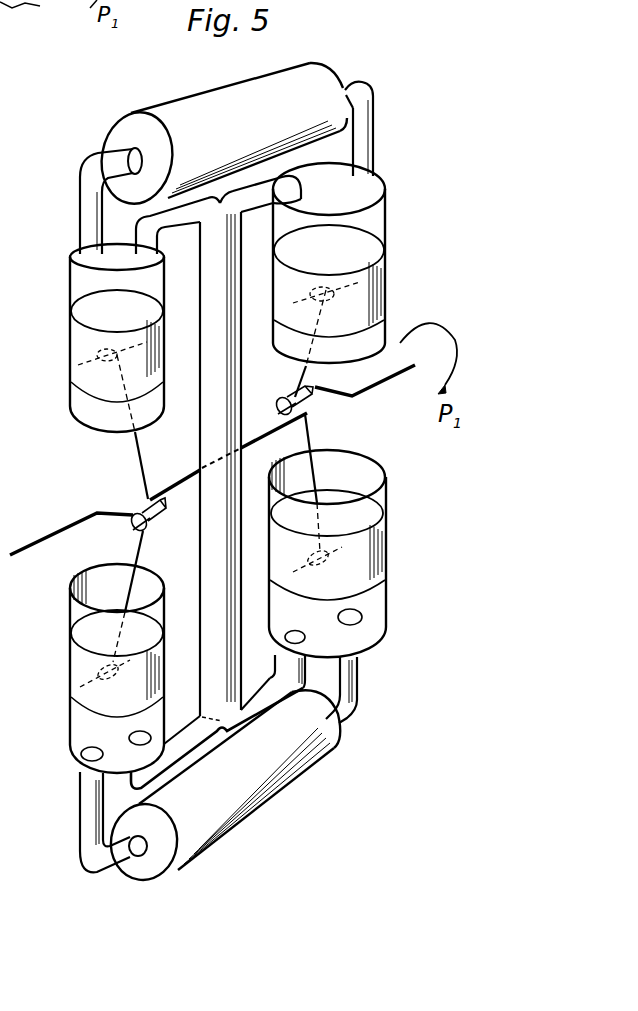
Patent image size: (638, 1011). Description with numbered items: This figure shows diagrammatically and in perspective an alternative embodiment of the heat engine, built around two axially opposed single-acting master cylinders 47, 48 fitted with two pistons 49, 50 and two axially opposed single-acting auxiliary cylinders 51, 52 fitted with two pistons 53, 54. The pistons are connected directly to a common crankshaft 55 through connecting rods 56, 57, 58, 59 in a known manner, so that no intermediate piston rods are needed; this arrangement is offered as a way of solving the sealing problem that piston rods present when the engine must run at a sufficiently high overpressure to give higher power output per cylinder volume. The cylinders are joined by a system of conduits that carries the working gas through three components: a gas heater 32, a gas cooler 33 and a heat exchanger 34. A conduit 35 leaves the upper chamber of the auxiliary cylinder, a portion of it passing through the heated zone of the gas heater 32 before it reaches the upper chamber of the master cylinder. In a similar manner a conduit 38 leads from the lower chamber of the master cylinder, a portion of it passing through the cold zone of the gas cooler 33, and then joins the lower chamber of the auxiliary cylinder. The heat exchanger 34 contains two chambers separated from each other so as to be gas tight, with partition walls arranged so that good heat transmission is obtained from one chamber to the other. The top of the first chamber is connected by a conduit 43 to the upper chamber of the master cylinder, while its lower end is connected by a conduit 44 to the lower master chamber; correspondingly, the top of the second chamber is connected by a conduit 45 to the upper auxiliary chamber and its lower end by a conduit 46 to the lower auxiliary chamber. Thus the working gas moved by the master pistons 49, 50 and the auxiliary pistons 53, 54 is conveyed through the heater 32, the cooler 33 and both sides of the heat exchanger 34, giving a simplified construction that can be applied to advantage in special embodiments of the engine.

The gas heater 32 is at (178, 104).
The gas cooler 33 is at (270, 774).
The heat exchanger 34 is at (203, 436).
The conduit 35 is at (82, 200).
The conduit 38 is at (350, 672).
The conduit 43 is at (247, 194).
The conduit 44 is at (272, 686).
The conduit 45 is at (172, 228).
The conduit 46 is at (186, 742).
The master cylinder 47 is at (385, 212).
The master cylinder 48 is at (387, 490).
The piston 49 is at (370, 240).
The piston 50 is at (370, 512).
The auxiliary cylinder 51 is at (70, 279).
The auxiliary cylinder 52 is at (70, 617).
The piston 53 is at (80, 307).
The piston 54 is at (82, 630).
The crankshaft 55 is at (72, 523).
The connecting rod 56 is at (301, 377).
The connecting rod 57 is at (311, 436).
The connecting rod 58 is at (133, 452).
The piston rod 59 is at (134, 549).